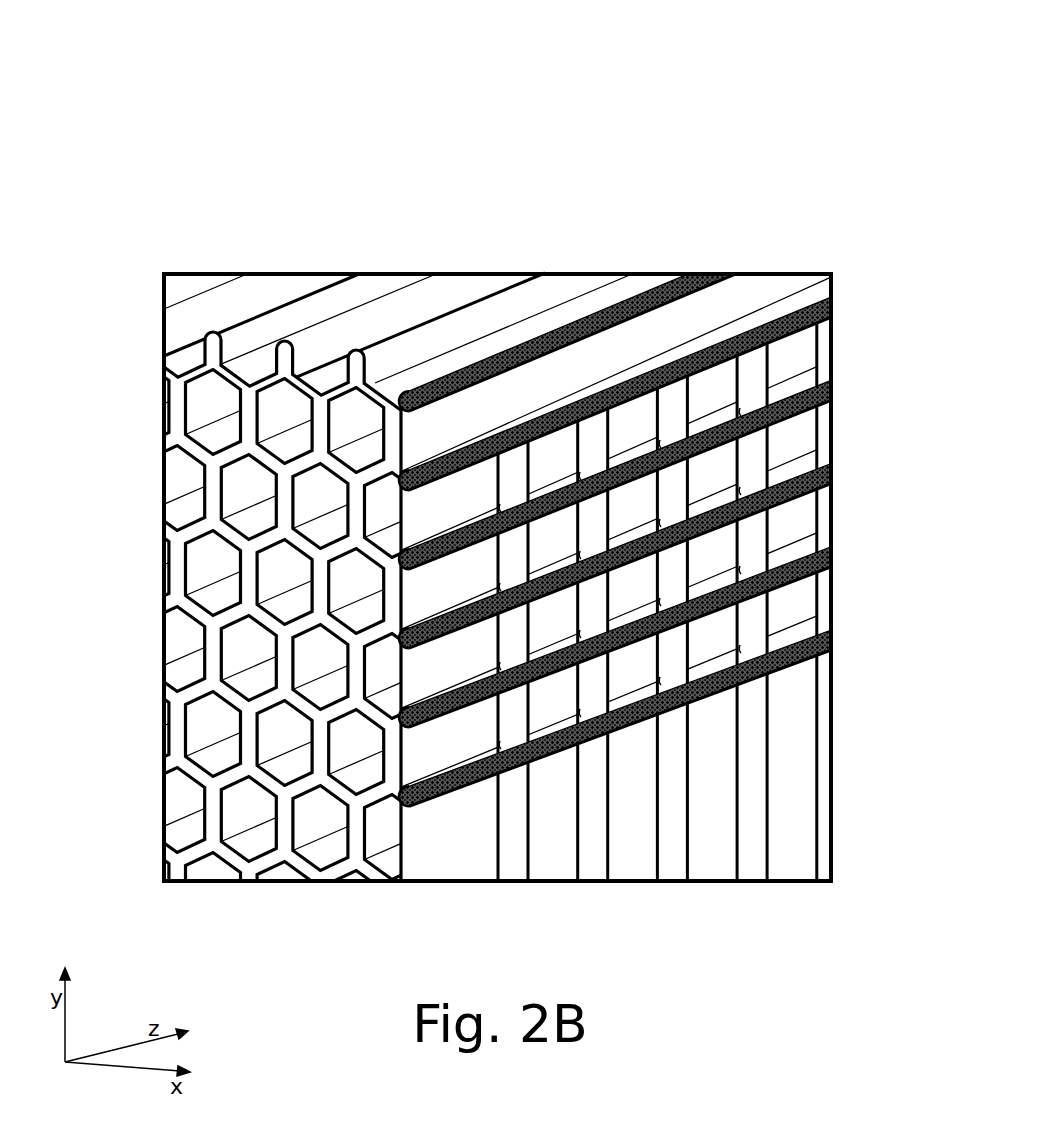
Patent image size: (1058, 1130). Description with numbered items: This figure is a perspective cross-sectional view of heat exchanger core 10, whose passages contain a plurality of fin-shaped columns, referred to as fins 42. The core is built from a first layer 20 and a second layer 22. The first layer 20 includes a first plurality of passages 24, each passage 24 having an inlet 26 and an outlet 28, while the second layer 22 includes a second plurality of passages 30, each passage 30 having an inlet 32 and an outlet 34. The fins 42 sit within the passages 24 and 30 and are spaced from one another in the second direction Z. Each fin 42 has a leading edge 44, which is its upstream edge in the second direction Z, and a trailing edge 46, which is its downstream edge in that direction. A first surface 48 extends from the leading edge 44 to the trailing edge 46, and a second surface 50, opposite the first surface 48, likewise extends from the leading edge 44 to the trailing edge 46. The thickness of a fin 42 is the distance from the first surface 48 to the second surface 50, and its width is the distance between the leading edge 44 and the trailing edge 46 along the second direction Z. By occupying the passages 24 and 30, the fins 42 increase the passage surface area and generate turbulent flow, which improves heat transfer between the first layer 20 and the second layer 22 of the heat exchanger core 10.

The heat exchanger core 10 is at (774, 102).
The first layer 20 is at (757, 300).
The second layer 22 is at (802, 345).
The first plurality of passages 24 is at (352, 428).
The inlet 26 is at (366, 420).
The outlet 28 is at (818, 304).
The second plurality of passages 30 is at (262, 487).
The inlet 32 is at (315, 498).
The outlet 34 is at (832, 367).
The fin-shaped columns 42 is at (693, 452).
The leading edge 44 is at (573, 447).
The trailing edge 46 is at (611, 440).
The first surface 48 is at (598, 497).
The second surface 50 is at (575, 460).